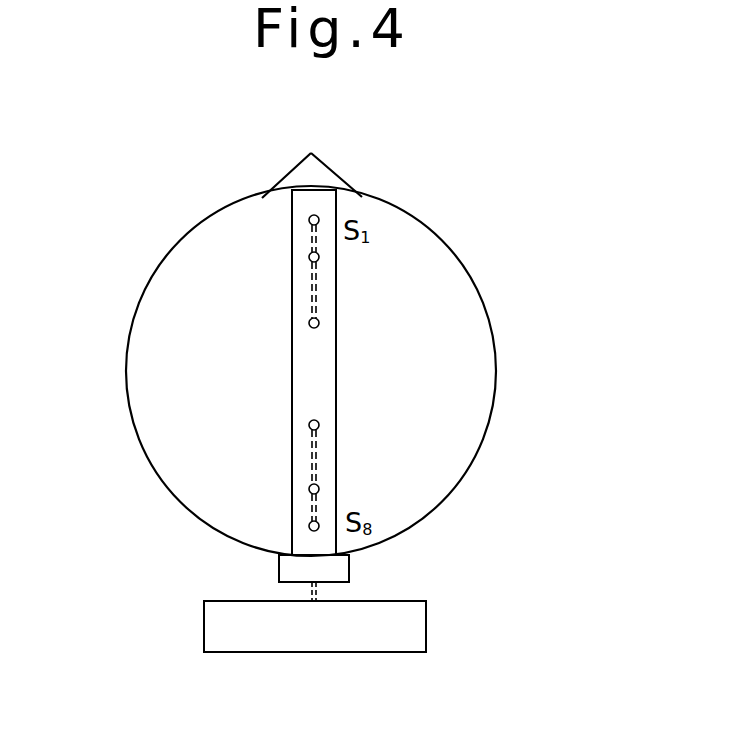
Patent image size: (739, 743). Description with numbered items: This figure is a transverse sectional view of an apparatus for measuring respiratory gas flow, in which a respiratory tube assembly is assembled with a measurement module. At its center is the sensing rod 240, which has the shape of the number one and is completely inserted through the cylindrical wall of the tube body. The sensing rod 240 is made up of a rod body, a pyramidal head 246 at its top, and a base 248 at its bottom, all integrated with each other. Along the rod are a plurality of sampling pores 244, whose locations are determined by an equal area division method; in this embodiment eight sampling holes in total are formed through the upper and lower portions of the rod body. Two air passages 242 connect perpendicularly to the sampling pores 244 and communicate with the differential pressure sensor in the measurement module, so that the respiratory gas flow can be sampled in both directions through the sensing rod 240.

The sensing rod 240 is at (336, 305).
The air passages 242 is at (309, 219).
The sampling pores 244 is at (313, 302).
The pyramidal head 246 is at (333, 172).
The base 248 is at (350, 569).